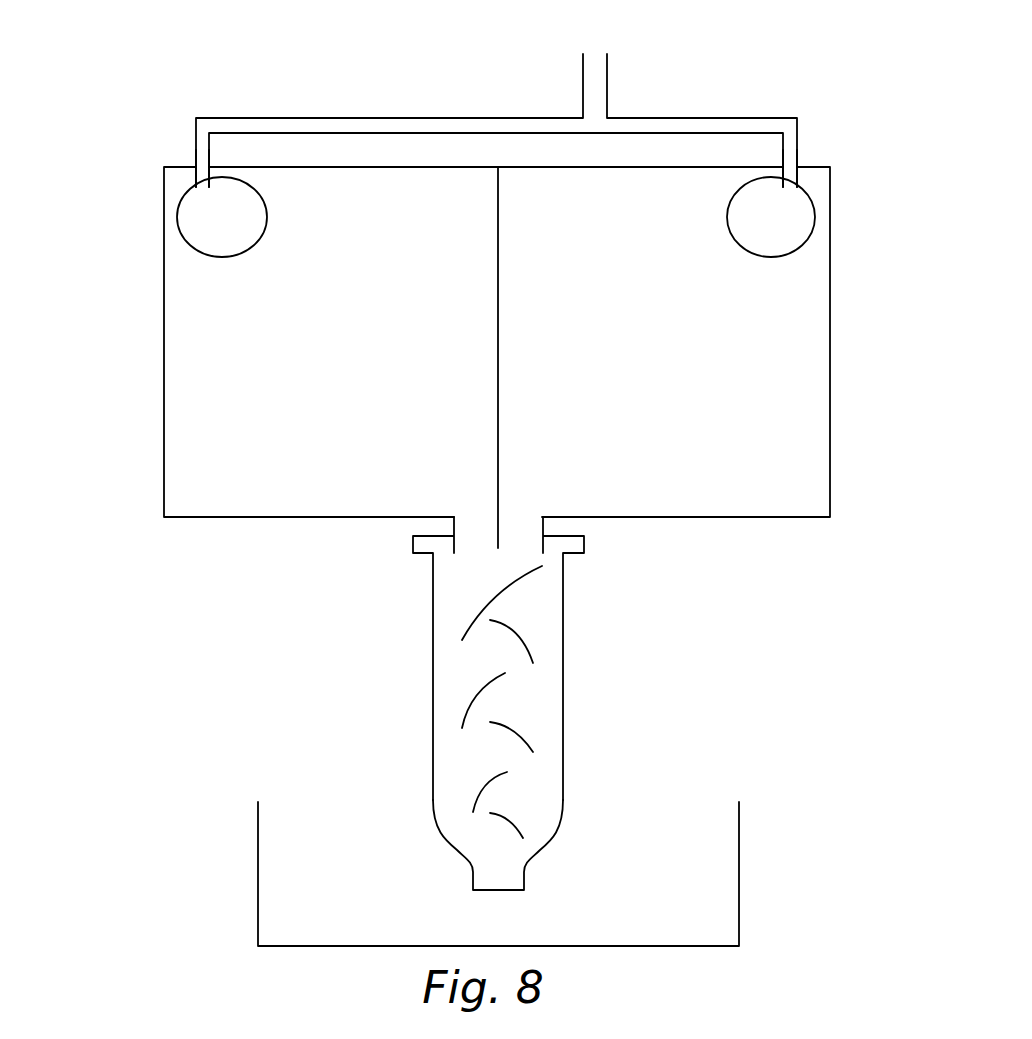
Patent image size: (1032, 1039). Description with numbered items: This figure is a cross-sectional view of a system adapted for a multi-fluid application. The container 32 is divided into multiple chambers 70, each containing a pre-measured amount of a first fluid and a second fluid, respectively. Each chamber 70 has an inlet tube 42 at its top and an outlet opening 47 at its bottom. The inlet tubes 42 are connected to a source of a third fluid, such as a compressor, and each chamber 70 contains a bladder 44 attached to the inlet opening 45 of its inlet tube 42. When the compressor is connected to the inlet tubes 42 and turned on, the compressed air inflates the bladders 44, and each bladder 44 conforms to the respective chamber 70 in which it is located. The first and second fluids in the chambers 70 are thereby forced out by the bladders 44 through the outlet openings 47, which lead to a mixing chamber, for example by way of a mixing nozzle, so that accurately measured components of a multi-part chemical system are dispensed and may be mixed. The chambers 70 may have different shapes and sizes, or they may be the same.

The container 32 is at (832, 342).
The inlet tube 42 is at (205, 152).
The bladder 44 is at (185, 200).
The inlet opening 45 is at (200, 190).
The outlet opening 47 is at (482, 517).
The chamber 70 is at (357, 418).